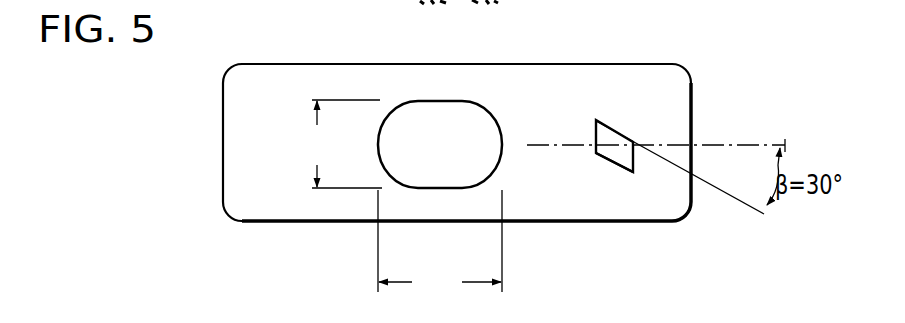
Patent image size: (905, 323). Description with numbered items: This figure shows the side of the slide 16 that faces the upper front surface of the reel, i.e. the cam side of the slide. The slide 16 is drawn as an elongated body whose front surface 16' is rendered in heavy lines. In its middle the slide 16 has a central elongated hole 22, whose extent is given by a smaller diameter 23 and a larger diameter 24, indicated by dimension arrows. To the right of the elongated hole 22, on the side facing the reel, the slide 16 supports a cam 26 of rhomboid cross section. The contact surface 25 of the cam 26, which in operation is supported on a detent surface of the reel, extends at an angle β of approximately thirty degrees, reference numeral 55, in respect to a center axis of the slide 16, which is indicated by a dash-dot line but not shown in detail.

The slide 16 is at (413, 142).
The front surface 16' is at (738, 83).
The central elongated hole 22 is at (456, 159).
The smaller diameter 23 is at (344, 144).
The larger diameter 24 is at (440, 244).
The contact surface 25 is at (612, 130).
The cam 26 is at (612, 163).
The angle β of approximately 30° 55 is at (770, 205).